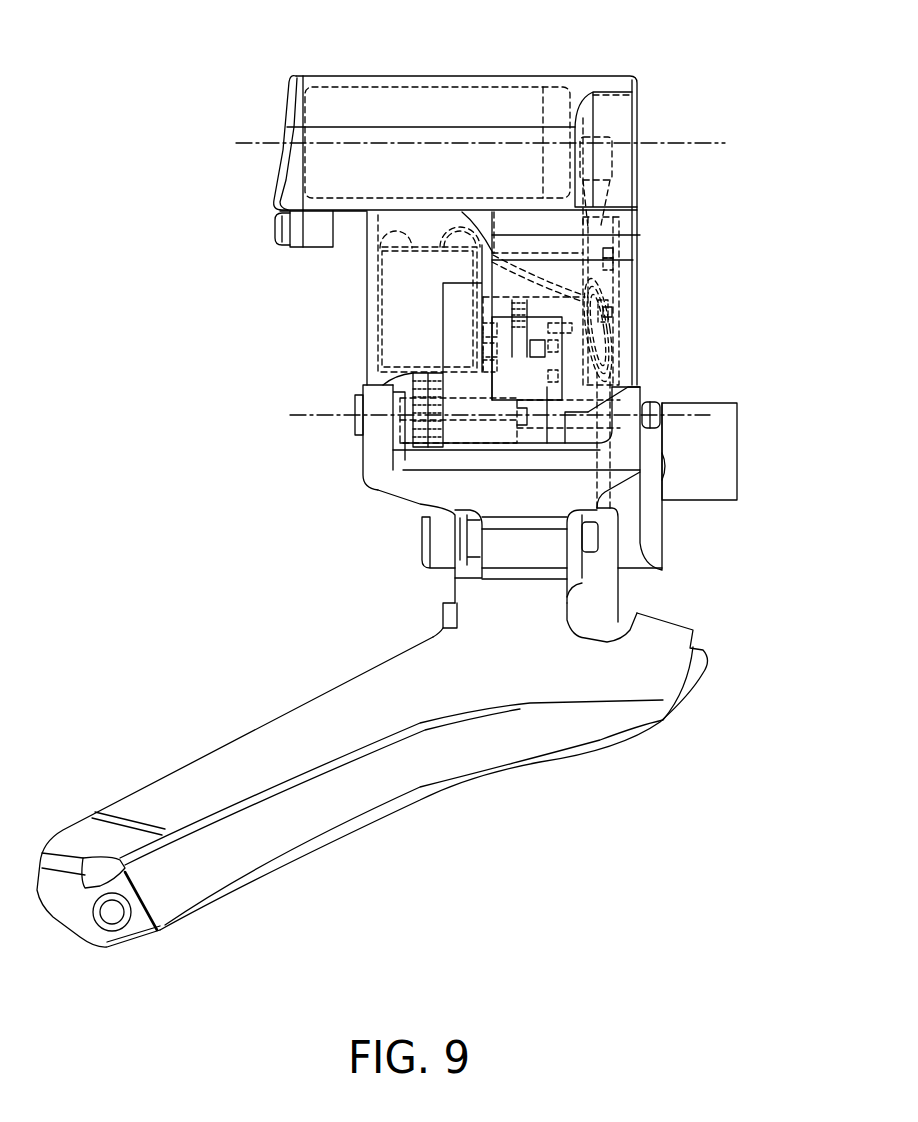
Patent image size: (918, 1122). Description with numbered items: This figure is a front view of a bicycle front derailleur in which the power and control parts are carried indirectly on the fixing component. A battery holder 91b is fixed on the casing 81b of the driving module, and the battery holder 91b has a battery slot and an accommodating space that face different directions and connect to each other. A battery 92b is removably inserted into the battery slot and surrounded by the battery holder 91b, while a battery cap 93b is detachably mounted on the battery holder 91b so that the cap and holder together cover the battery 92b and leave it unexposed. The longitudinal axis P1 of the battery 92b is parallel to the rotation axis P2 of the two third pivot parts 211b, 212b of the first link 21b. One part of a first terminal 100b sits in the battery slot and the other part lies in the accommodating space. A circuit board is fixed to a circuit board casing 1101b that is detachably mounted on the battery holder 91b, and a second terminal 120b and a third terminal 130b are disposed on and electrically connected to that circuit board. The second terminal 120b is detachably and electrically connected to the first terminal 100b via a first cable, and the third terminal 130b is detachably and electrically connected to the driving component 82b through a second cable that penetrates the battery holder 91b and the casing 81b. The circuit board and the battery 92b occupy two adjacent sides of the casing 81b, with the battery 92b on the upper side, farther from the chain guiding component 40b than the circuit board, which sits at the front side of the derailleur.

The battery holder 91b is at (426, 75).
The battery 92b is at (343, 85).
The battery cap 93b is at (290, 100).
The longitudinal axis P1 is at (464, 146).
The first terminal 100b is at (604, 165).
The second terminal 120b is at (603, 257).
The circuit board casing 1101b is at (610, 290).
The third terminal 130b is at (610, 322).
The driving component 82b is at (380, 228).
The casing 81b is at (367, 326).
The rotation axis P2 is at (483, 416).
The third pivot part 212b is at (377, 425).
The first link 21b is at (450, 487).
The third pivot part 211b is at (628, 432).
The chain guiding component 40b is at (257, 752).